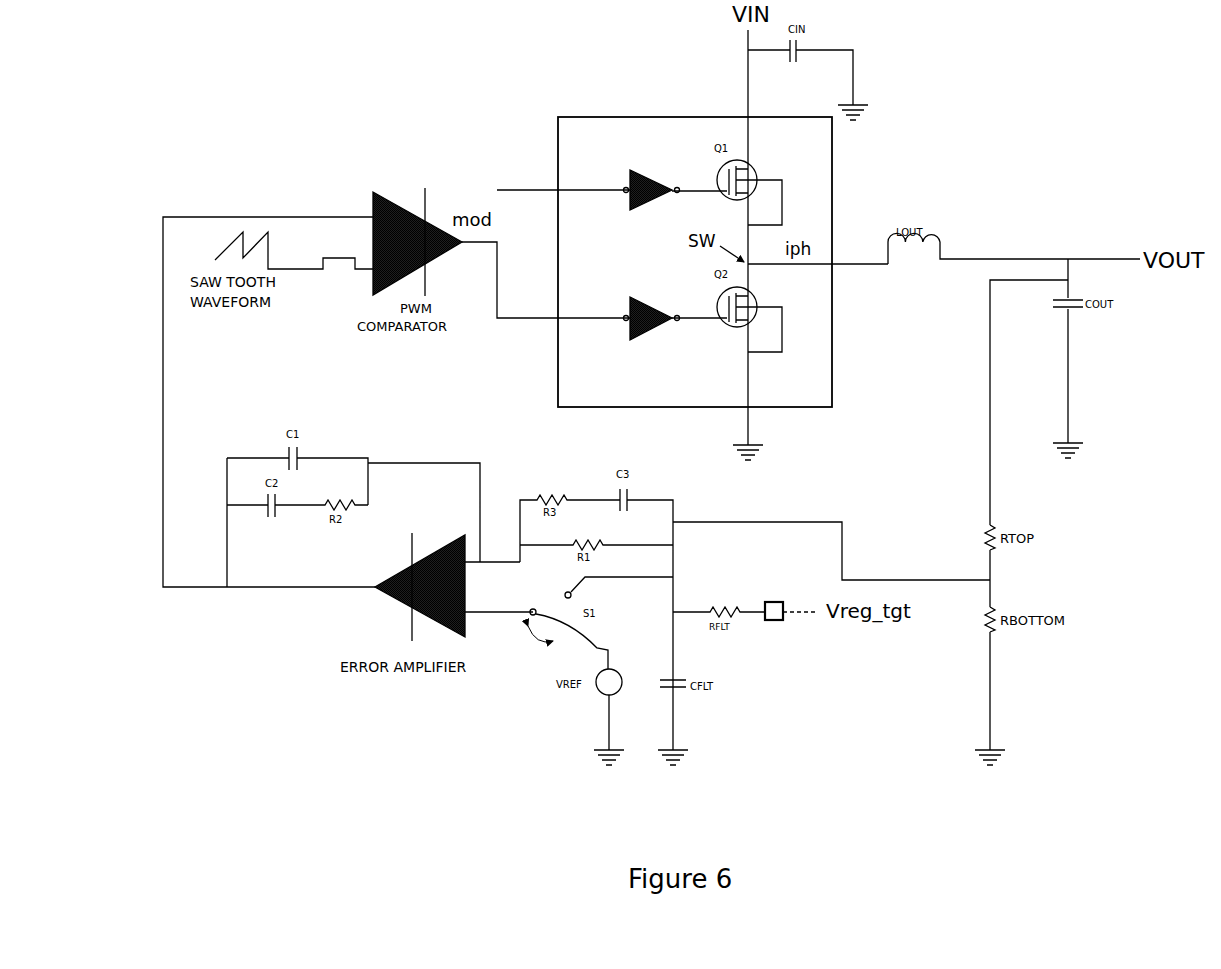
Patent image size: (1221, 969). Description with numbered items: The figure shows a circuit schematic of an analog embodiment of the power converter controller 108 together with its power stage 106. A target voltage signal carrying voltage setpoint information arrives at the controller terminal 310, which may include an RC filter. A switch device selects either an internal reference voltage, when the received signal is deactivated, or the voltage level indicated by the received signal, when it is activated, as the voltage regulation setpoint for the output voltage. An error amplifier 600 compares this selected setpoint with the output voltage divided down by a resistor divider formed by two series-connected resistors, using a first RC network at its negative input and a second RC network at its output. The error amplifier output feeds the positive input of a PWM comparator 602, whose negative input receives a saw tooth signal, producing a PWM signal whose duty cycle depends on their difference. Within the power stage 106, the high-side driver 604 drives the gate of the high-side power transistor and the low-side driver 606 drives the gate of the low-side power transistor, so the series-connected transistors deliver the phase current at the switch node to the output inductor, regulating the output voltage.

The power converter controller 108 is at (36, 68).
The power stage 106 is at (600, 147).
The PWM comparator 602 is at (422, 253).
The high-side driver 604 is at (652, 172).
The low-side driver 606 is at (652, 306).
The error amplifier 600 is at (449, 598).
The controller terminal 310 is at (783, 620).